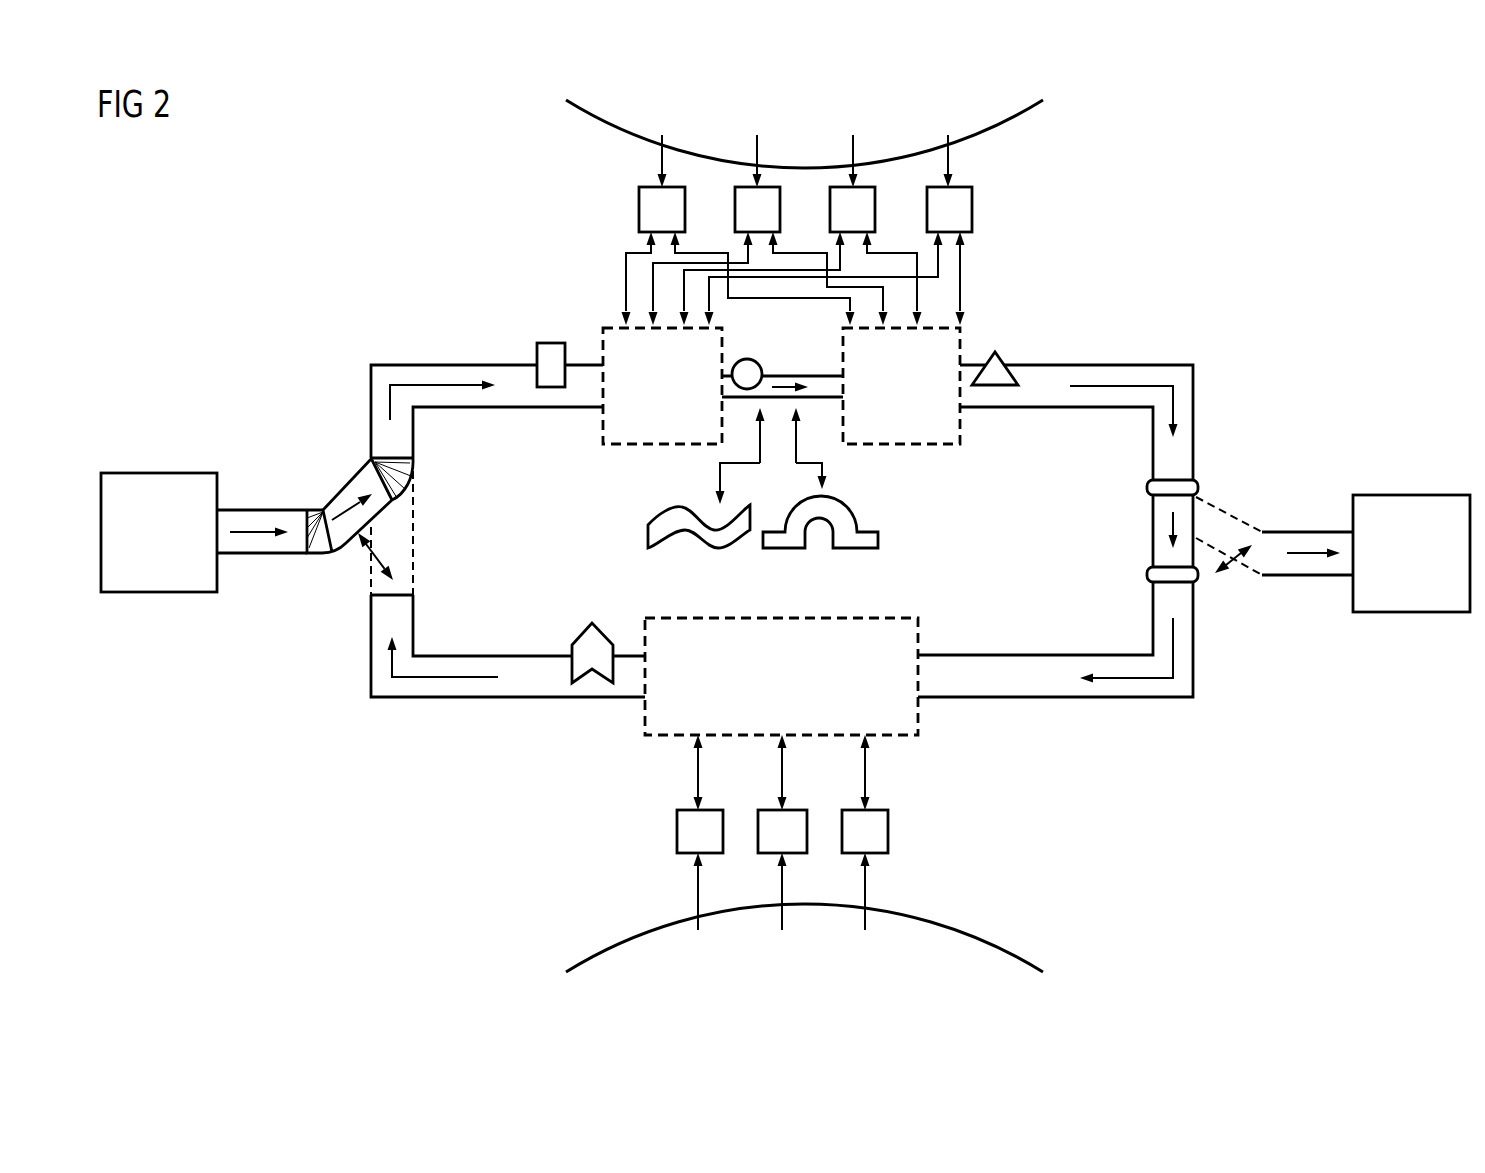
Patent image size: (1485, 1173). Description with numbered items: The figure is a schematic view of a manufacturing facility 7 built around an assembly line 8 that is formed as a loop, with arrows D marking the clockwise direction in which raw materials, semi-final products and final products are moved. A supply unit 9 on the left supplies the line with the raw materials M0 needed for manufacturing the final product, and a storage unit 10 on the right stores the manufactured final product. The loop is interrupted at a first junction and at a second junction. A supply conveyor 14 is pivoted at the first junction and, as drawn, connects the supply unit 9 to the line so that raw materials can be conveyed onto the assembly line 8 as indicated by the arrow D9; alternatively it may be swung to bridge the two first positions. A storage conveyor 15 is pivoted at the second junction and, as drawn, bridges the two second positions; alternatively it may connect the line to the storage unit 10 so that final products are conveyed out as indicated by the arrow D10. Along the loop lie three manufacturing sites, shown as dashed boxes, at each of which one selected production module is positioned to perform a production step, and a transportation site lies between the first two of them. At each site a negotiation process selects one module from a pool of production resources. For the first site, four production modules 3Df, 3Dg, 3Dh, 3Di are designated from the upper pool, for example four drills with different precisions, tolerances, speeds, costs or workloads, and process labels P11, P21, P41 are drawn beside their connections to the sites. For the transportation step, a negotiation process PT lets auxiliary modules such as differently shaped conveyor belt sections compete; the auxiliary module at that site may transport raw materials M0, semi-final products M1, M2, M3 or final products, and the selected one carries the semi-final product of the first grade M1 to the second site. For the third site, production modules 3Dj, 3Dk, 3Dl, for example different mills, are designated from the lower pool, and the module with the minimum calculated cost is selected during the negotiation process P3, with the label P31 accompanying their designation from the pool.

The manufacturing facility 7 is at (147, 256).
The assembly line 8 is at (387, 365).
The supply unit 9 is at (152, 473).
The storage unit 10 is at (1412, 612).
The supply conveyor 14 is at (358, 488).
The storage conveyor 15 is at (1163, 556).
The production module 3Df is at (639, 206).
The production module 3Dg is at (777, 187).
The production module 3Dh is at (863, 187).
The production module 3Di is at (972, 205).
The production module 3Dj is at (677, 822).
The production module 3Dk is at (767, 855).
The production module 3Dl is at (850, 855).
The raw materials M0 is at (553, 340).
The semi-final product of the first grade M1 is at (758, 363).
The semi-final product M2 is at (1003, 363).
The semi-final product M3 is at (578, 636).
The flow direction arrows D is at (388, 408).
The arrow D9 is at (243, 530).
The arrow D10 is at (1318, 576).
The negotiation process PT is at (771, 456).
The parameter P11 is at (1086, 279).
The parameter P21 is at (1086, 279).
The parameter P41 is at (988, 230).
The negotiation process P3 is at (905, 740).
The parameter P31 is at (905, 850).